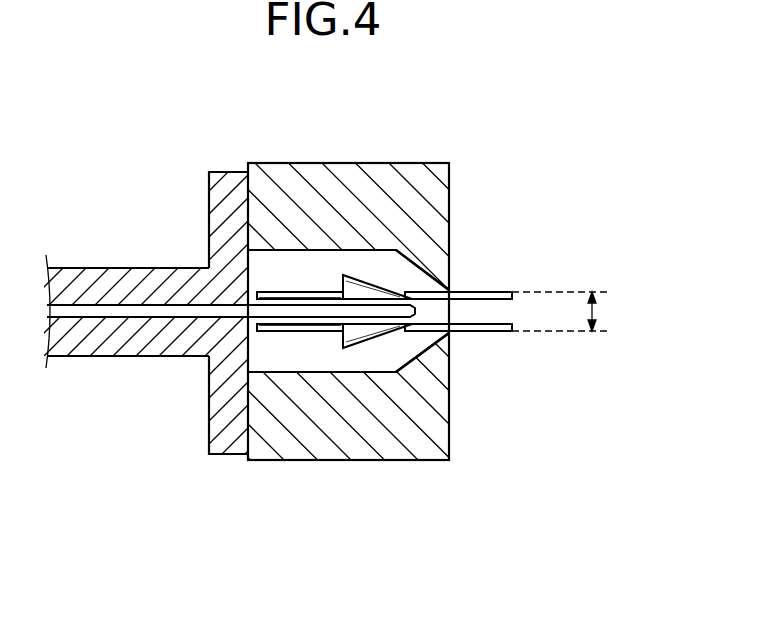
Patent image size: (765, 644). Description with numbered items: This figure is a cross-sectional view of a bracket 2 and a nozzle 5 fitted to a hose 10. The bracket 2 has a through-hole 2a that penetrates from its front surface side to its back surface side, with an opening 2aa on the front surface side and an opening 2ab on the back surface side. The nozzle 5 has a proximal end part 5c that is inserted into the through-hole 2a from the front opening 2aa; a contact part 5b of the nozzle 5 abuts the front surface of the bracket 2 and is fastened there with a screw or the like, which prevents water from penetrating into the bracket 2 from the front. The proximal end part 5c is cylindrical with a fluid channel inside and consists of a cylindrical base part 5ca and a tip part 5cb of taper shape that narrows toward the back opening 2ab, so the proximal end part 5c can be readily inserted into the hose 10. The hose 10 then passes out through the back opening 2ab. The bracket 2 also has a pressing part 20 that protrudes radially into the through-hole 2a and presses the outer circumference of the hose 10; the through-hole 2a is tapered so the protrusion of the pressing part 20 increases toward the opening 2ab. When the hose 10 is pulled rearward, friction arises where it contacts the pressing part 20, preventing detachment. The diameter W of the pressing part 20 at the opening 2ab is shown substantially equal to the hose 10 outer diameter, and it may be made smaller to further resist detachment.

The bracket 2 is at (408, 170).
The through-hole 2a is at (377, 508).
The opening 2aa is at (257, 360).
The opening 2ab is at (442, 347).
The nozzle 5 is at (147, 280).
The contact part 5b is at (224, 182).
The proximal end part 5c is at (258, 113).
The base part 5ca is at (279, 292).
The tip part 5cb is at (352, 276).
The hose 10 is at (497, 291).
The pressing part 20 is at (443, 270).
The diameter of the pressing part W is at (592, 313).